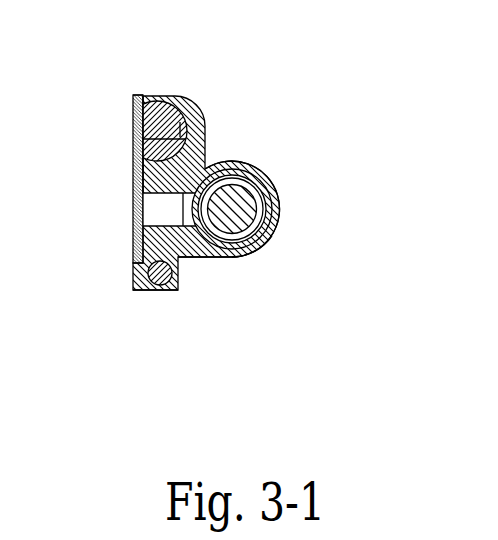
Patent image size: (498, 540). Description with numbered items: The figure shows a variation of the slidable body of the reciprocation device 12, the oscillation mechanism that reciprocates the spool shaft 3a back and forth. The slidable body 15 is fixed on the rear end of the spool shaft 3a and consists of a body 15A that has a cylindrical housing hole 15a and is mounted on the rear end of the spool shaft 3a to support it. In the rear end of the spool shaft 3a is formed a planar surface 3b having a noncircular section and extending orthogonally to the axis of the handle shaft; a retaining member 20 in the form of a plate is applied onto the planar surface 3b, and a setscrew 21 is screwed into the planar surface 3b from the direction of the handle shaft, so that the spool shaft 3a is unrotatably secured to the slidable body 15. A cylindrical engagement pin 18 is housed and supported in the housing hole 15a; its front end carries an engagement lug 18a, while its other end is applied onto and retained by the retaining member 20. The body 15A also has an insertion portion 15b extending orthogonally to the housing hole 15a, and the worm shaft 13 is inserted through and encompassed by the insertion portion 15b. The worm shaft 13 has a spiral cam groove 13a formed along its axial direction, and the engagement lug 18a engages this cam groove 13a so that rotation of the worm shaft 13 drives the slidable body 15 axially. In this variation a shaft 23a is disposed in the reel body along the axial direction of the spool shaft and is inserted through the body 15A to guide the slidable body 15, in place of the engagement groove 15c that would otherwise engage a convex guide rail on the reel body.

The reciprocation device 12 is at (350, 108).
The slidable body 15 is at (209, 106).
The body 15A is at (158, 178).
The cylindrical housing hole 15a is at (198, 257).
The insertion portion 15b is at (250, 248).
The engagement groove 15c is at (170, 290).
The worm shaft 13 is at (246, 207).
The spiral cam groove 13a is at (264, 250).
The engagement pin 18 is at (206, 160).
The engagement lug 18a is at (236, 168).
The retaining member 20 is at (132, 245).
The setscrew 21 is at (132, 130).
The spool shaft 3a is at (160, 105).
The planar surface 3b is at (132, 110).
The shaft 23a is at (150, 290).